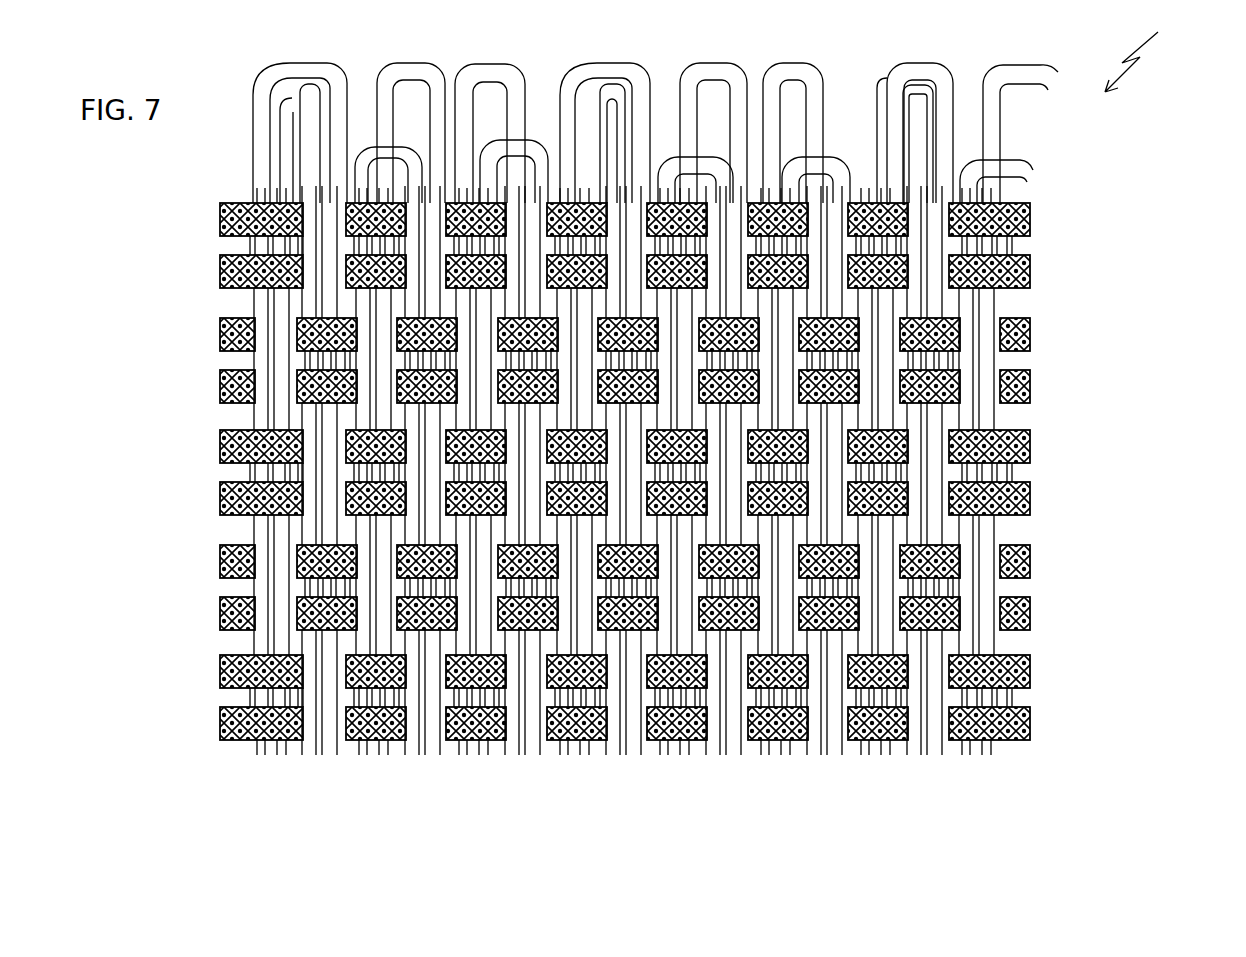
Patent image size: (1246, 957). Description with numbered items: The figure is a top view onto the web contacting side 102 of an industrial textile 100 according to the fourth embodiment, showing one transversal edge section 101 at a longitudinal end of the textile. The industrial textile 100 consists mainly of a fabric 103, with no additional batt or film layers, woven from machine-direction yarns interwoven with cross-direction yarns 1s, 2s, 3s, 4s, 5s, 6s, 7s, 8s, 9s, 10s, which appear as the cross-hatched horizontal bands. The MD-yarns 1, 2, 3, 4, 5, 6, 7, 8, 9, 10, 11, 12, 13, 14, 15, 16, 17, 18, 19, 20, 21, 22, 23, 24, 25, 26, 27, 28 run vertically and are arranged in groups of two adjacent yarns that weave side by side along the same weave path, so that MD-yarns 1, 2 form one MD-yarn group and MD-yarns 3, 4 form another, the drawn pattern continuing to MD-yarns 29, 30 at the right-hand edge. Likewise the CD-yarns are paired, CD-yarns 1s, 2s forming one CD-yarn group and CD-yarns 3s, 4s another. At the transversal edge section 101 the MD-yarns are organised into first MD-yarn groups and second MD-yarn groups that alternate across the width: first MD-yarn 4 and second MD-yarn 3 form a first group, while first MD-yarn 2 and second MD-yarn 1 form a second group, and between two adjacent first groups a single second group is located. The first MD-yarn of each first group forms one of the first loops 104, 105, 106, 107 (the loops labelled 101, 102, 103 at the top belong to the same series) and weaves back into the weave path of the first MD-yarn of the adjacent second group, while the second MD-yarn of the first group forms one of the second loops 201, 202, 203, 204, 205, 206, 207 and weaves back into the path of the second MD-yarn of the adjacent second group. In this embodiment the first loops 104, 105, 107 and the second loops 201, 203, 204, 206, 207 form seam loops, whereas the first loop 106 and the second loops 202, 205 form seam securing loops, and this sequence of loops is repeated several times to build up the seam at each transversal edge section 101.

The industrial textile 100 is at (1170, 54).
The transversal edge section 101 is at (293, 77).
The web contacting side 102 is at (422, 58).
The fabric 103 is at (525, 140).
The first loop 104 is at (630, 63).
The first loop 105 is at (732, 58).
The first loop 106 is at (835, 157).
The first loop 107 is at (925, 58).
The second loop 201 is at (270, 84).
The second loop 202 is at (362, 140).
The second loop 203 is at (483, 62).
The second loop 204 is at (598, 50).
The second loop 205 is at (665, 160).
The second loop 206 is at (793, 57).
The second loop 207 is at (877, 80).
The CD-yarn 1s is at (220, 724).
The CD-yarn 2s is at (220, 672).
The CD-yarn 3s is at (220, 615).
The CD-yarn 4s is at (220, 562).
The CD-yarn 5s is at (220, 500).
The CD-yarn 6s is at (220, 448).
The CD-yarn 7s is at (220, 388).
The CD-yarn 8s is at (220, 338).
The CD-yarn 9s is at (220, 272).
The CD-yarn 10s is at (220, 222).
The MD-yarn 1 is at (258, 764).
The MD-yarn 2 is at (282, 764).
The MD-yarn 3 is at (307, 764).
The MD-yarn 4 is at (332, 764).
The MD-yarn 5 is at (358, 764).
The MD-yarn 6 is at (383, 764).
The MD-yarn 7 is at (412, 764).
The MD-yarn 8 is at (435, 764).
The MD-yarn 9 is at (458, 764).
The MD-yarn 10 is at (487, 764).
The MD-yarn 11 is at (508, 764).
The MD-yarn 12 is at (535, 764).
The MD-yarn 13 is at (558, 764).
The MD-yarn 14 is at (585, 764).
The MD-yarn 15 is at (612, 764).
The MD-yarn 16 is at (637, 764).
The MD-yarn 17 is at (660, 764).
The MD-yarn 18 is at (684, 764).
The MD-yarn 19 is at (708, 764).
The MD-yarn 20 is at (737, 764).
The MD-yarn 21 is at (755, 764).
The MD-yarn 22 is at (786, 764).
The MD-yarn 23 is at (810, 764).
The MD-yarn 24 is at (836, 764).
The MD-yarn 25 is at (855, 764).
The MD-yarn 26 is at (885, 764).
The MD-yarn 27 is at (905, 764).
The MD-yarn 28 is at (932, 764).
The warp thread 29 is at (959, 764).
The warp thread 30 is at (992, 764).